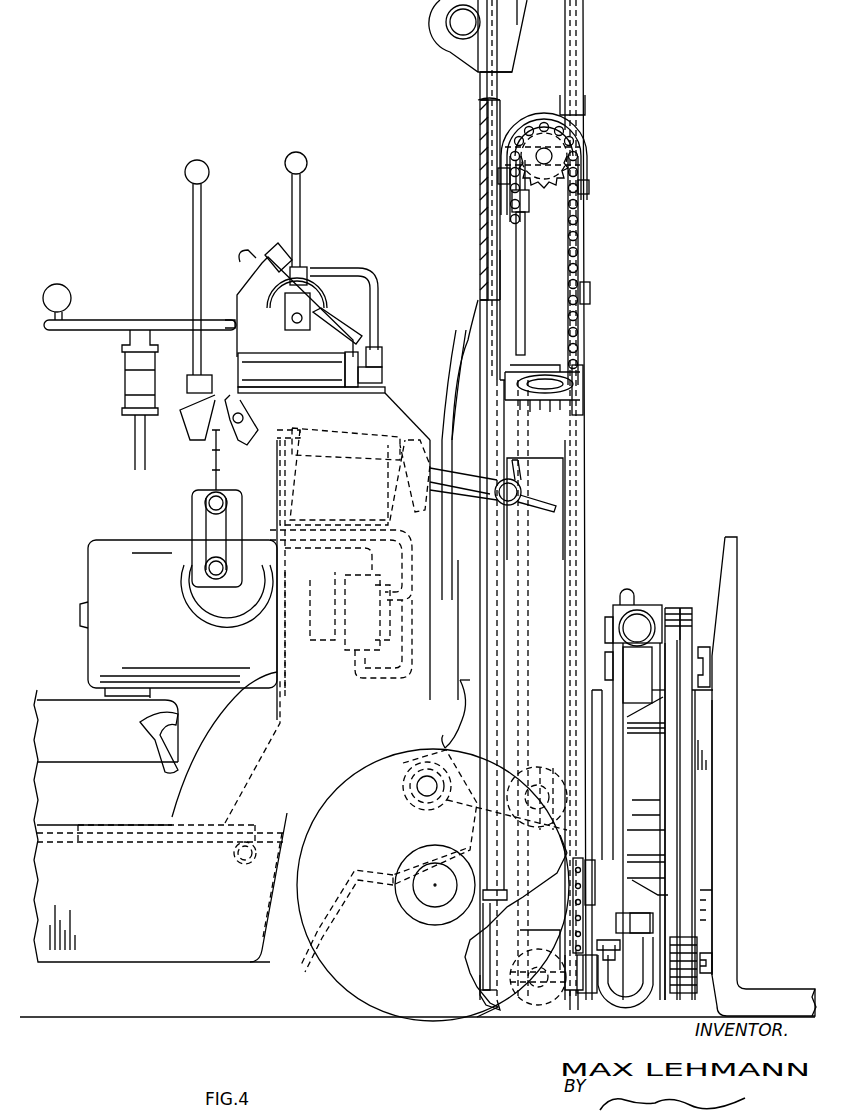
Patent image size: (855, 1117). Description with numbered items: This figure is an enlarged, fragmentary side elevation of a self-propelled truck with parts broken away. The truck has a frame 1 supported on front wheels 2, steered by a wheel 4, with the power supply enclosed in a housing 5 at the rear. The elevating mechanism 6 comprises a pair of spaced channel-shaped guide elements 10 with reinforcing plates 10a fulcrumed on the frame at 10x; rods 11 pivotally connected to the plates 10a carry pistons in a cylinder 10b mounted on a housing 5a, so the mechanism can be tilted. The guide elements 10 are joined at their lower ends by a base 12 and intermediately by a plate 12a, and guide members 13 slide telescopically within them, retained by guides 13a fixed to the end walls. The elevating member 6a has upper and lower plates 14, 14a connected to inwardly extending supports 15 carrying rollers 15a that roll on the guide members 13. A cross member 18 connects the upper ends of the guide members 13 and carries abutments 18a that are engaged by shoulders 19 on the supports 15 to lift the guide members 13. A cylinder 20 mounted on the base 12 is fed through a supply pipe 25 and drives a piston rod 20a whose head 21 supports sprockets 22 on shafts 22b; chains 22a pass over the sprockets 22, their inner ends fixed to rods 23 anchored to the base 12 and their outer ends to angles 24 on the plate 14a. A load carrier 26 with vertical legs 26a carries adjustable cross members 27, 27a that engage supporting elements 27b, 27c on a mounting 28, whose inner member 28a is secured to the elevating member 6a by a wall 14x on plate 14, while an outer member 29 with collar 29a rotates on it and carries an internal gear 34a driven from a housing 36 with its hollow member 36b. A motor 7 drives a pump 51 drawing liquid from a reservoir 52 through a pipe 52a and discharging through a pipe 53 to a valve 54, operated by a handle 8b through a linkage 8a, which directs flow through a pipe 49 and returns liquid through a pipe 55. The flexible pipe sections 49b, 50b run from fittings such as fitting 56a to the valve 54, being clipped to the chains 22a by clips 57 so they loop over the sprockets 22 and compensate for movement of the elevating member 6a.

The frame 1 is at (160, 817).
The front wheels 2 is at (340, 983).
The steering wheel 4 is at (62, 330).
The housing 5 is at (692, 120).
The housing 5a is at (372, 405).
The elevating mechanism 6 is at (608, 777).
The elevating member 6a is at (596, 683).
The motor 7 is at (122, 548).
The linkage 8a is at (223, 432).
The handle 8b is at (193, 230).
The guide elements 10 is at (481, 196).
The reinforcing plates 10a is at (566, 525).
The cylinder 10b is at (343, 482).
The fulcrum 10x is at (418, 802).
The rods 11 is at (470, 482).
The base 12 is at (568, 985).
The plate 12a is at (478, 278).
The guide members 13 is at (500, 100).
The guides 13a is at (470, 145).
The upper plate 14 is at (610, 756).
The lower plate 14a is at (610, 985).
The wall 14x is at (610, 668).
The supports 15 is at (575, 748).
The rollers 15a is at (538, 1020).
The cross member 18 is at (445, 22).
The abutments 18a is at (528, 45).
The shoulders 19 is at (525, 848).
The cylinder 20 is at (556, 250).
The piston rod 20a is at (586, 405).
The head 21 is at (580, 125).
The reeving elements 22 is at (545, 190).
The flexible members 22a is at (580, 272).
The shafts 22b is at (552, 157).
The rods 23 is at (524, 324).
The angles 24 is at (548, 928).
The supply pipe 25 is at (477, 990).
The load carrier 26 is at (764, 776).
The vertical legs 26a is at (730, 810).
The upper cross member 27 is at (710, 657).
The lower cross member 27a is at (712, 966).
The upper supporting element 27b is at (710, 735).
The lower supporting element 27c is at (710, 892).
The mounting 28 is at (647, 858).
The inner member 28a is at (632, 800).
The outer member 29 is at (690, 620).
The collar 29a is at (660, 810).
The internal gear 34a is at (678, 612).
The housing 36 is at (652, 690).
The hollow member 36b is at (641, 612).
The pipe 49 is at (193, 520).
The outer pipe section 49b is at (225, 503).
The outer pipe section 50b is at (648, 996).
The pump 51 is at (350, 650).
The reservoir 52 is at (380, 525).
The pipe 52a is at (420, 680).
The pipe 53 is at (230, 615).
The valve mechanism 54 is at (193, 498).
The pipe 55 is at (290, 508).
The fitting 56a is at (640, 918).
The clips 57 is at (502, 176).